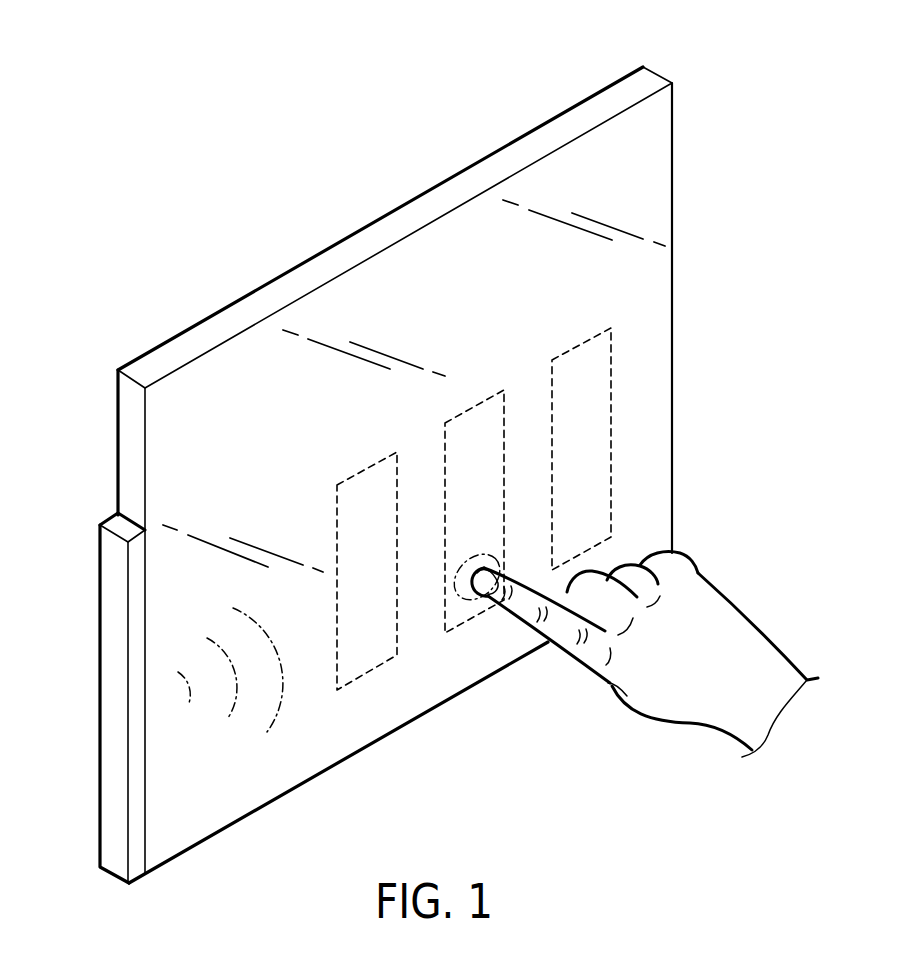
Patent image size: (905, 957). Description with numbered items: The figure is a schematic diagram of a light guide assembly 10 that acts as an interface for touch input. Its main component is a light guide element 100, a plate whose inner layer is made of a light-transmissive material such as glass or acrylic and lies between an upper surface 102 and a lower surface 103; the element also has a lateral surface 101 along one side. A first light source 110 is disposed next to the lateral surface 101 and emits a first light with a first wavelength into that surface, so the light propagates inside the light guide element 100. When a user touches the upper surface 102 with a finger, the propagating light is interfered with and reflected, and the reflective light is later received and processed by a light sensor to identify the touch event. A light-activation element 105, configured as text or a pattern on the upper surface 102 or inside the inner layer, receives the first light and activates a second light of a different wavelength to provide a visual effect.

The light guide assembly 10 is at (105, 78).
The light guide element 100 is at (660, 308).
The lateral surface 101 is at (132, 452).
The upper surface 102 is at (647, 150).
The lower surface 103 is at (600, 90).
The light-activation element 105 is at (613, 440).
The first light source 110 is at (115, 695).